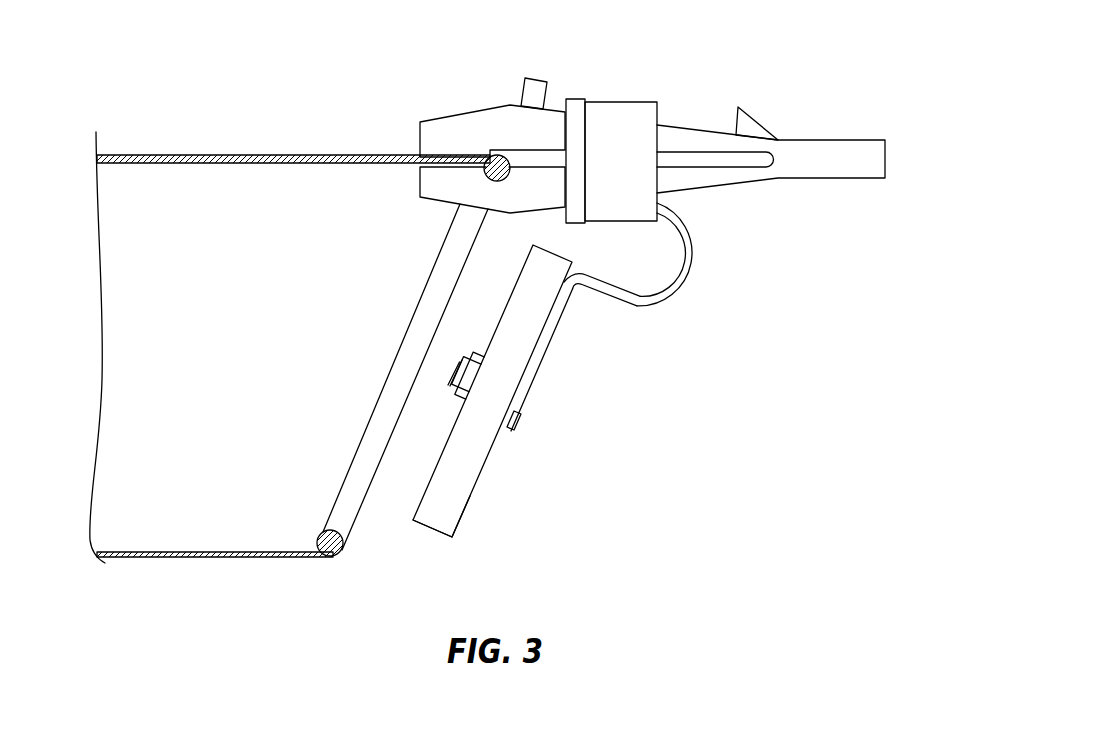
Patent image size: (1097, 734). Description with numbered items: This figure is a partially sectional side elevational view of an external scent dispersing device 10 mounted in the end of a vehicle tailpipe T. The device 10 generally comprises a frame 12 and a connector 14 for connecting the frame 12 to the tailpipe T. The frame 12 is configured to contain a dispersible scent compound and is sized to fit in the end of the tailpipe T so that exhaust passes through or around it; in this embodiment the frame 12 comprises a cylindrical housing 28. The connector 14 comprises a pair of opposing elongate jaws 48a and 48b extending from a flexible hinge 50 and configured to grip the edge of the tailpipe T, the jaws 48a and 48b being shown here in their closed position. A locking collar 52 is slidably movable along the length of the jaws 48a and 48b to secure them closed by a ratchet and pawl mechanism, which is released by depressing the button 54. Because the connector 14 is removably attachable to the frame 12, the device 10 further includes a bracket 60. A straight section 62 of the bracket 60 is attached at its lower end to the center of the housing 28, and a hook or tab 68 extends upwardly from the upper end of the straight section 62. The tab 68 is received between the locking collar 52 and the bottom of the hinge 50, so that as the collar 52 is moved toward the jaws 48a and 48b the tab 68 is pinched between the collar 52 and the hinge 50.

The tailpipe T is at (208, 153).
The external scent dispersing device 10 is at (643, 101).
The frame 12 is at (503, 391).
The connector 14 is at (805, 141).
The cylindrical housing 28 is at (490, 510).
The jaw 48a is at (444, 125).
The jaw 48b is at (443, 183).
The flexible hinge 50 is at (683, 130).
The locking collar 52 is at (625, 102).
The button 54 is at (538, 78).
The bracket 60 is at (651, 315).
The straight section 62 is at (543, 355).
The tab 68 is at (700, 225).